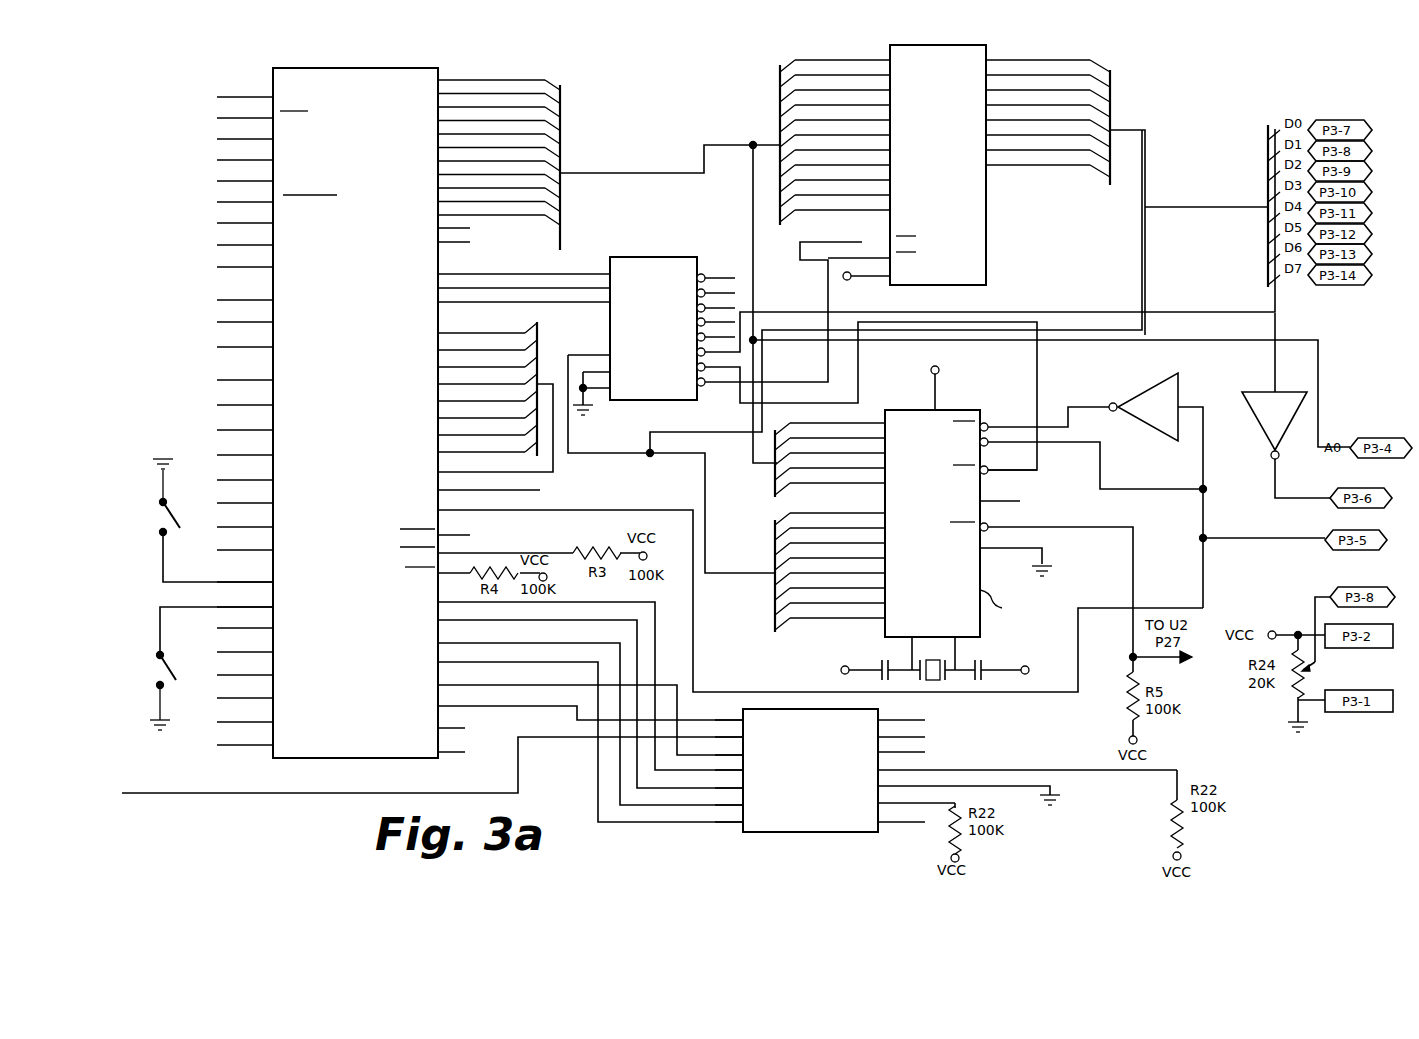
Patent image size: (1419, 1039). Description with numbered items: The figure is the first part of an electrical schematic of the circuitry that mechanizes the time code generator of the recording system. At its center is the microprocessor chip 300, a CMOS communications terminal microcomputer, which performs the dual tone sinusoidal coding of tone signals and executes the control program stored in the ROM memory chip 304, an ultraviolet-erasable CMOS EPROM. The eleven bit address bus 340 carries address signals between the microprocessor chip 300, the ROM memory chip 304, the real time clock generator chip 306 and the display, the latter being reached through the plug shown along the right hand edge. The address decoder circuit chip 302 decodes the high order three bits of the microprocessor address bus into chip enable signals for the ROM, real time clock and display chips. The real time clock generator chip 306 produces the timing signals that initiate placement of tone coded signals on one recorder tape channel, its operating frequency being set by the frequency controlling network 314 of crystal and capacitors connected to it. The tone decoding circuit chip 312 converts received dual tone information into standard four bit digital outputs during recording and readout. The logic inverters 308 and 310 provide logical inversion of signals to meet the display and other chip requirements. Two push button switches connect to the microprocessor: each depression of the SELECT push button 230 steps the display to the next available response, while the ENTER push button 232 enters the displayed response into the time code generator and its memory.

The microprocessor chip 300 is at (352, 68).
The address decoder circuit chip 302 is at (660, 257).
The ROM memory chip 304 is at (986, 236).
The real time clock generator chip 306 is at (973, 410).
The logic inverter 308 is at (1140, 432).
The logic inverter 310 is at (1255, 416).
The tone decoding circuit chip 312 is at (745, 707).
The frequency controlling network 314 is at (829, 646).
The eleven bit address bus 340 is at (672, 175).
The SELECT push button switch 230 is at (186, 520).
The ENTER push button switch 232 is at (186, 668).